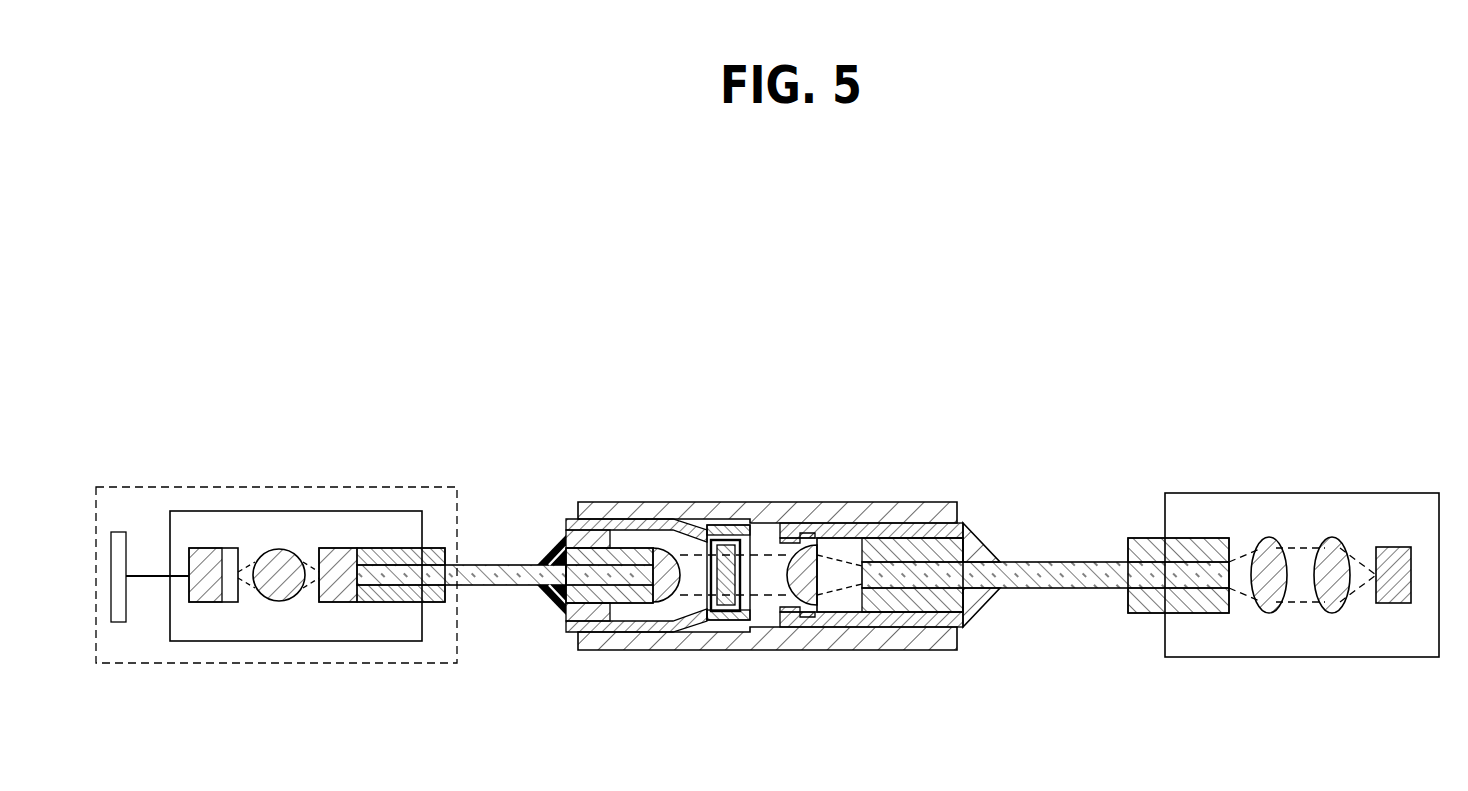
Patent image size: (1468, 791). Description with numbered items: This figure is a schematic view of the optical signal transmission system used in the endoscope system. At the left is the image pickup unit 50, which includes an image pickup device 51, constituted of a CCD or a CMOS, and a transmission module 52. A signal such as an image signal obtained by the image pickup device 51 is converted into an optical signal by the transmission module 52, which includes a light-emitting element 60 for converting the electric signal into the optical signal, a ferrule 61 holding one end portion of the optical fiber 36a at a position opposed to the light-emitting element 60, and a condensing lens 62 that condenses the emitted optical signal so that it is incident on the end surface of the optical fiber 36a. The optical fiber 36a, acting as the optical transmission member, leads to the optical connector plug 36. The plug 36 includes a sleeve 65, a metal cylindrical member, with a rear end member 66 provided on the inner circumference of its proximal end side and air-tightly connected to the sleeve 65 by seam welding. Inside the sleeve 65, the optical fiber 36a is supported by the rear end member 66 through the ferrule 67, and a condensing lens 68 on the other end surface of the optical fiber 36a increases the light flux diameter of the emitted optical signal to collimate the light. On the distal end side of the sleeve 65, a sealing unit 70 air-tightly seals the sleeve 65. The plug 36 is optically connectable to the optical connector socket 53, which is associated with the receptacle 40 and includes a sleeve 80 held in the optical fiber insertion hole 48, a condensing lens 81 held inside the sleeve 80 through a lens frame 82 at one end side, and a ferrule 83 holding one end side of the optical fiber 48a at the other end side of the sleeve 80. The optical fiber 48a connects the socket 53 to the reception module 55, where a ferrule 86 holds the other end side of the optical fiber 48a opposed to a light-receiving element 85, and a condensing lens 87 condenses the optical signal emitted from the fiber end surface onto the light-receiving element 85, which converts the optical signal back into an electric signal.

The optical connector plug 36 is at (627, 512).
The optical fiber 36a is at (483, 565).
The receptacle 40 is at (685, 502).
The optical fiber insertion hole 48 is at (902, 527).
The optical fiber 48a is at (1060, 562).
The image pickup unit 50 is at (232, 487).
The image pickup device 51 is at (115, 532).
The transmission module 52 is at (290, 511).
The optical connector socket 53 is at (832, 492).
The reception module 55 is at (1303, 493).
The light-emitting element 60 is at (205, 602).
The ferrule 61 is at (393, 602).
The condensing lens 62 is at (278, 601).
The sleeve 65 is at (587, 626).
The rear end member 66 is at (595, 521).
The ferrule 67 is at (575, 633).
The condensing lens 68 is at (683, 606).
The sealing unit 70 is at (728, 515).
The sleeve 80 is at (880, 621).
The condensing lens 81 is at (793, 611).
The lens frame 82 is at (806, 614).
The ferrule 83 is at (928, 622).
The light-receiving element 85 is at (1390, 603).
The ferrule 86 is at (1192, 613).
The condensing lens 87 is at (1328, 613).